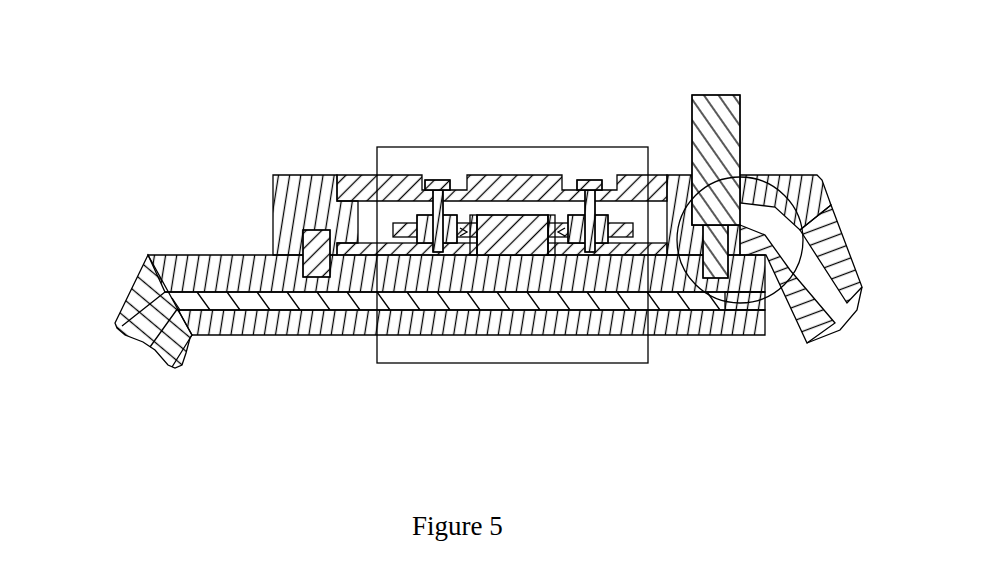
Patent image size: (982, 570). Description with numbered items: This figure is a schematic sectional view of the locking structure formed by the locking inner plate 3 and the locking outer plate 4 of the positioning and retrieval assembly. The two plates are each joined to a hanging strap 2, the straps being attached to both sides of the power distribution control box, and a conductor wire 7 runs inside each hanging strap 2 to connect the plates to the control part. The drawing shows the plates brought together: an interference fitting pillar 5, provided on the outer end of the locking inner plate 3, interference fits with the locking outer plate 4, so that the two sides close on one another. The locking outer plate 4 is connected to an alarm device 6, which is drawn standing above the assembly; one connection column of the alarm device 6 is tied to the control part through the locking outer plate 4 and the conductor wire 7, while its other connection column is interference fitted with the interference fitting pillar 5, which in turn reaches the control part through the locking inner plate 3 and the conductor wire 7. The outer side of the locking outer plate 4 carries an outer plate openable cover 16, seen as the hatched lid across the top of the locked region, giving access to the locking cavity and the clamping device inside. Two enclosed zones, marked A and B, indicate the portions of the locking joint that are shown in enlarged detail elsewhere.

The hanging strap 2 is at (132, 293).
The locking inner plate 3 is at (210, 337).
The locking outer plate 4 is at (290, 207).
The interference fitting pillar 5 is at (307, 277).
The alarm device 6 is at (716, 135).
The conductor wire 7 is at (210, 280).
The outer plate openable cover 16 is at (368, 195).
The detail region A is at (738, 337).
The detail region B is at (490, 363).